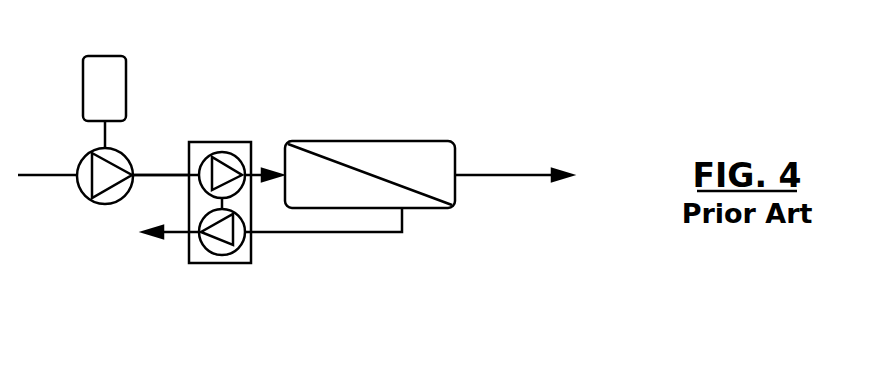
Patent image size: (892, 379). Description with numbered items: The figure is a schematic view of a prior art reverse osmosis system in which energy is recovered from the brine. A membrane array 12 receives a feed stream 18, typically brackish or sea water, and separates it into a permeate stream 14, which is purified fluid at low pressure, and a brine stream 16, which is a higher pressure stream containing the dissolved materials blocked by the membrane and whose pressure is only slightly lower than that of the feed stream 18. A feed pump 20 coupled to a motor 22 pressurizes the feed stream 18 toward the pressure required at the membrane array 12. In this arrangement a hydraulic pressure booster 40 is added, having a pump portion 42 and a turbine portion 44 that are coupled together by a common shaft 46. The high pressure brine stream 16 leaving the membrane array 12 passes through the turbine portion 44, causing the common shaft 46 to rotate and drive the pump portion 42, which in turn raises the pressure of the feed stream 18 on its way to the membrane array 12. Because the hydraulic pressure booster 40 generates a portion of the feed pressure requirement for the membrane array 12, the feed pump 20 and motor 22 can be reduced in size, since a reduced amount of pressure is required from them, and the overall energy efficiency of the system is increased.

The membrane array 12 is at (385, 141).
The permeate stream 14 is at (498, 174).
The brine stream 16 is at (407, 214).
The feed stream 18 is at (153, 173).
The feed pump 20 is at (78, 200).
The motor 22 is at (114, 56).
The hydraulic pressure booster 40 is at (238, 142).
The pump portion 42 is at (201, 157).
The turbine portion 44 is at (238, 250).
The common shaft 46 is at (218, 200).